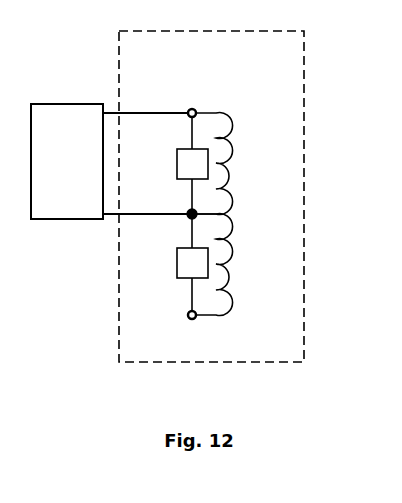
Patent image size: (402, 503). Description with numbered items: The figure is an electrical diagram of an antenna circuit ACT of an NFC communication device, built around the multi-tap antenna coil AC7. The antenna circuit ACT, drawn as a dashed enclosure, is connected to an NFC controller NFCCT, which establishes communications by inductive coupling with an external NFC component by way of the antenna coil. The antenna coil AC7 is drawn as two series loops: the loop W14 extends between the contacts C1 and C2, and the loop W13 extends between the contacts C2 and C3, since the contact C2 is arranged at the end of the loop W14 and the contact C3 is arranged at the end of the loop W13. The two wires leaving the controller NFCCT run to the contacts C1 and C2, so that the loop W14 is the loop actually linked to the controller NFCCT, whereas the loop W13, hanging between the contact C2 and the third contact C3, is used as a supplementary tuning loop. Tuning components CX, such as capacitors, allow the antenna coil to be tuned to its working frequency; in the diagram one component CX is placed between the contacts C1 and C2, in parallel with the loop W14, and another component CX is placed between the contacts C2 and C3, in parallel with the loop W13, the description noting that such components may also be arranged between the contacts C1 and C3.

The antenna circuit ACT is at (281, 350).
The NFC controller NFCCT is at (41, 169).
The tuning components CX is at (192, 213).
The antenna coil AC7 is at (243, 194).
The loop W14 is at (233, 151).
The loop W13 is at (233, 253).
The contact C1 is at (192, 110).
The contact C2 is at (190, 213).
The contact C3 is at (189, 319).